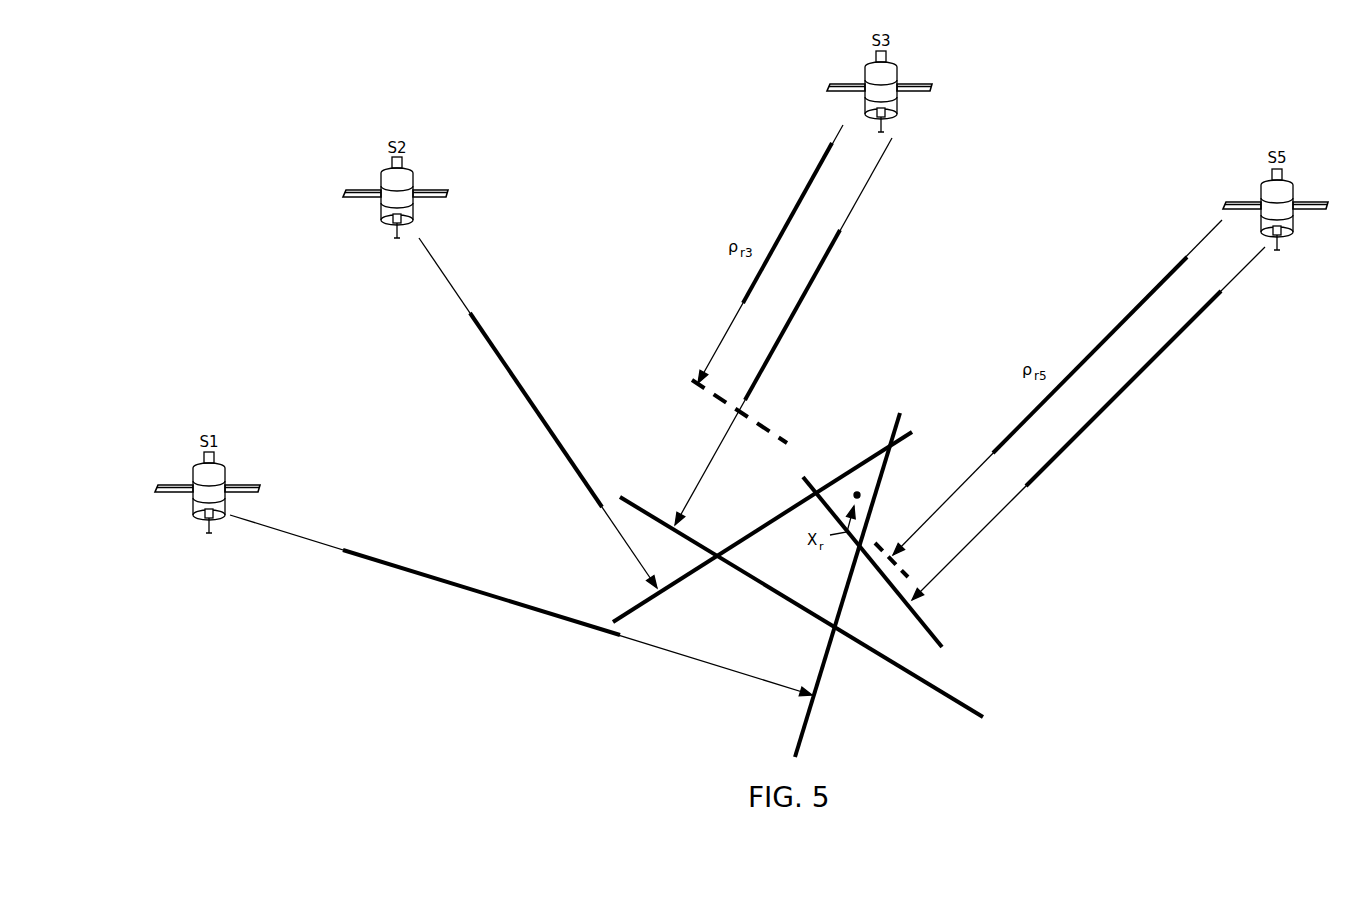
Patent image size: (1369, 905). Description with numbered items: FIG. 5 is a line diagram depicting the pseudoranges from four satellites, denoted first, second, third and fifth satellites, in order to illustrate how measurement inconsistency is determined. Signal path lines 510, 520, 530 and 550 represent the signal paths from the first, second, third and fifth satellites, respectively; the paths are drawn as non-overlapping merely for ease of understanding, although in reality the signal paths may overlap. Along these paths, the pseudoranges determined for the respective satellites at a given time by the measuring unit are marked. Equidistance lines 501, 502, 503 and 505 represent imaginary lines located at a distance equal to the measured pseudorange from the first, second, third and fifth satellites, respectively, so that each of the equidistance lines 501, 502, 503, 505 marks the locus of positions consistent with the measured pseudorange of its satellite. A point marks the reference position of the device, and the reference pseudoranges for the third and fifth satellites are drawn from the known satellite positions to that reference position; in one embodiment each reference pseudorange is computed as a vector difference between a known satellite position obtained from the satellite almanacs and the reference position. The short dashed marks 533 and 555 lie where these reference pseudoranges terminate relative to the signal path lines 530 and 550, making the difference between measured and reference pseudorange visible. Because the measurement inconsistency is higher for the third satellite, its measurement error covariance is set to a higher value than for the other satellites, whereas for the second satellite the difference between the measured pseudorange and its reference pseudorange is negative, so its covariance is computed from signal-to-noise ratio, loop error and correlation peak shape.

The imaginary equidistance line 501 is at (805, 725).
The imaginary equidistance line 502 is at (762, 523).
The imaginary equidistance line 503 is at (777, 593).
The imaginary equidistance line 505 is at (932, 622).
The signal path line 510 is at (342, 555).
The signal path line 520 is at (468, 312).
The signal path line 530 is at (833, 243).
The reference line of position for satellite S3 (reference range ρr3) 533 is at (762, 425).
The signal path line 550 is at (1027, 487).
The reference line of position for satellite S5 (reference range ρr5) 555 is at (908, 576).